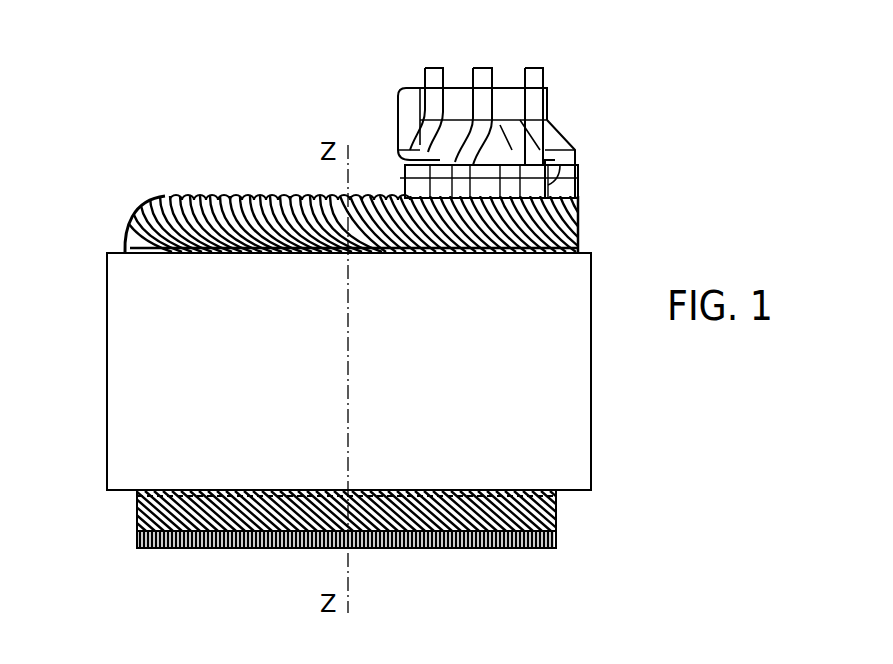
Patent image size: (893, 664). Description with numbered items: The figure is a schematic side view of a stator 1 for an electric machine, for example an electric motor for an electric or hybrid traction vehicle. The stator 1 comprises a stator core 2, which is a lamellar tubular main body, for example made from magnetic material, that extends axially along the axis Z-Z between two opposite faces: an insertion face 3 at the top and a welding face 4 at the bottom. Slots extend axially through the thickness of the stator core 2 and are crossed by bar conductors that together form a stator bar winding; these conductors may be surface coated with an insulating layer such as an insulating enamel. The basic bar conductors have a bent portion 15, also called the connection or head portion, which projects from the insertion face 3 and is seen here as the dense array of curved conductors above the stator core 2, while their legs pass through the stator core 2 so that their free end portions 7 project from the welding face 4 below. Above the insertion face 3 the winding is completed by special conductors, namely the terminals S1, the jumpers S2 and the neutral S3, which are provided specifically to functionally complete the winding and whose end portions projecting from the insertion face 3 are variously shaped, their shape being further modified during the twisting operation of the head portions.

The stator 1 is at (146, 128).
The stator core 2 is at (118, 350).
The insertion face 3 is at (120, 251).
The welding face 4 is at (118, 491).
The free end portions 7 is at (226, 549).
The bent portion 15 is at (276, 192).
The terminals S1 is at (434, 68).
The jumpers S2 is at (555, 120).
The neutral S3 is at (400, 96).